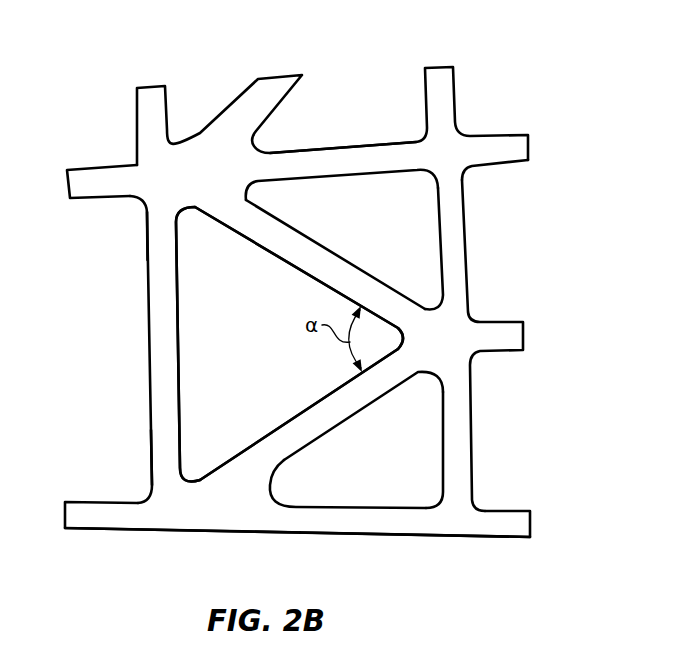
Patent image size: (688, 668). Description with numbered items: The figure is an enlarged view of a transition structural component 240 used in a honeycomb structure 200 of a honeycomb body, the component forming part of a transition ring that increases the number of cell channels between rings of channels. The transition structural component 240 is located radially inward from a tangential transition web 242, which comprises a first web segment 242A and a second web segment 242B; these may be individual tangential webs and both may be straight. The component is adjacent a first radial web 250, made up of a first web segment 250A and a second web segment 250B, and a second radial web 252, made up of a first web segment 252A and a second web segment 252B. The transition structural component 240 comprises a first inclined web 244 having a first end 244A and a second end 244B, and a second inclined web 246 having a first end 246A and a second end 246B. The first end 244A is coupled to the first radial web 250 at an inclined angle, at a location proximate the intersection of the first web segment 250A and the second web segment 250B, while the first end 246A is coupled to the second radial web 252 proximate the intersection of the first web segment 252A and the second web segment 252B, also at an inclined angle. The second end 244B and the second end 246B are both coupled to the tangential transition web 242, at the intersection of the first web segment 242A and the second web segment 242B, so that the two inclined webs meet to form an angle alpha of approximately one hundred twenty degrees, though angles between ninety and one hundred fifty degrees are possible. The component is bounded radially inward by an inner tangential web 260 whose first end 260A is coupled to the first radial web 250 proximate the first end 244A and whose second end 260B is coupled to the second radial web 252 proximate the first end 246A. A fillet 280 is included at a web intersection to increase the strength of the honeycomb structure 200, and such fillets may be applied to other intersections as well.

The honeycomb structure 200 is at (300, 304).
The first radial web 250 is at (288, 133).
The first web segment 250A is at (107, 165).
The second web segment 250B is at (343, 142).
The fillet 280 is at (465, 172).
The tangential transition web 242 is at (499, 345).
The first web segment 242A is at (465, 232).
The second web segment 242B is at (472, 447).
The second radial web 252 is at (297, 522).
The first web segment 252A is at (112, 530).
The second web segment 252B is at (420, 538).
The inner tangential web 260 is at (120, 349).
The first end 260A is at (145, 232).
The second end 260B is at (150, 465).
The transition structural component 240 is at (280, 343).
The first inclined web 244 is at (310, 268).
The first end 244A is at (218, 223).
The second end 244B is at (407, 295).
The second inclined web 246 is at (321, 421).
The first end 246A is at (222, 470).
The second end 246B is at (403, 385).